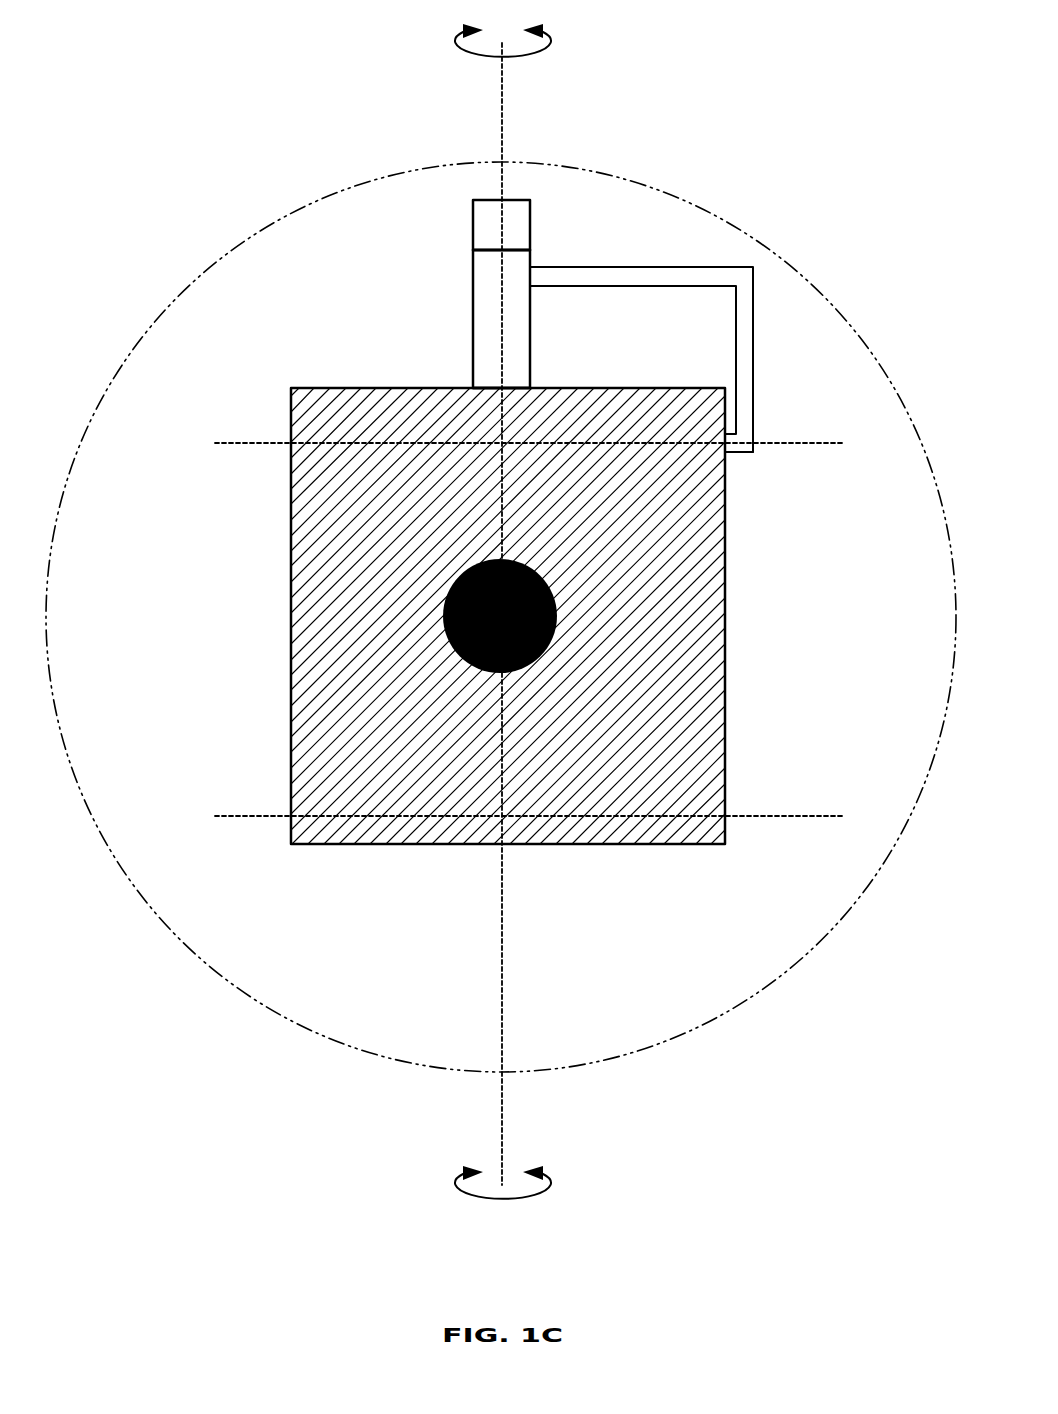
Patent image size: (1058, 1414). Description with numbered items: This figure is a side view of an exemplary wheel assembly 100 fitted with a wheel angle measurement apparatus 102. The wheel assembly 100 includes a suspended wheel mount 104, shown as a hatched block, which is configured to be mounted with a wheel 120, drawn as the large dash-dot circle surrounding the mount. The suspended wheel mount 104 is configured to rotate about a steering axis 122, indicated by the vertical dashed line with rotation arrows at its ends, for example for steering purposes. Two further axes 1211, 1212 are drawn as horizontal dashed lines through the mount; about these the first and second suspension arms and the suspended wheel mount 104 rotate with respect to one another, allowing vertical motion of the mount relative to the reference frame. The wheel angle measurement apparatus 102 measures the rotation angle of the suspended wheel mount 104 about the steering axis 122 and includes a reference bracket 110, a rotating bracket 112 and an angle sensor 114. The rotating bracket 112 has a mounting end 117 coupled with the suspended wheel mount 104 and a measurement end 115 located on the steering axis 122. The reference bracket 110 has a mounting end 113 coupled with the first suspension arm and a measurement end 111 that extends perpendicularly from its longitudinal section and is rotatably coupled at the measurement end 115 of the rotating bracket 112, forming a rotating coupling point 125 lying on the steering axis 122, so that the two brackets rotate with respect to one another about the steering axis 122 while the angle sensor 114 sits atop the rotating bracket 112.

The wheel assembly 100 is at (425, 88).
The wheel angle measurement apparatus 102 is at (561, 343).
The suspended wheel mount 104 is at (726, 657).
The reference bracket 110 is at (670, 392).
The measurement end of reference bracket 111 is at (532, 287).
The rotating bracket 112 is at (530, 343).
The mounting end of reference bracket 113 is at (742, 452).
The angle sensor 114 is at (473, 230).
The measurement end of rotating bracket 115 is at (473, 256).
The mounting end of rotating bracket 117 is at (473, 383).
The wheel 120 is at (49, 577).
The axis 1211 is at (823, 447).
The axis 1212 is at (787, 820).
The steering axis 122 is at (500, 953).
The rotating coupling point 125 is at (503, 257).